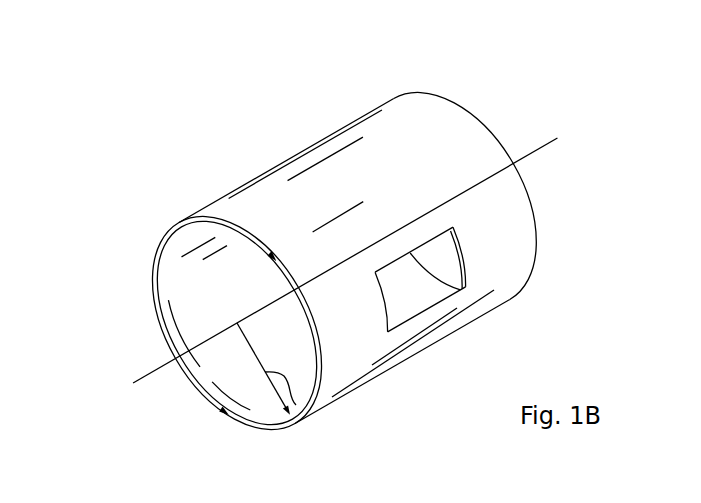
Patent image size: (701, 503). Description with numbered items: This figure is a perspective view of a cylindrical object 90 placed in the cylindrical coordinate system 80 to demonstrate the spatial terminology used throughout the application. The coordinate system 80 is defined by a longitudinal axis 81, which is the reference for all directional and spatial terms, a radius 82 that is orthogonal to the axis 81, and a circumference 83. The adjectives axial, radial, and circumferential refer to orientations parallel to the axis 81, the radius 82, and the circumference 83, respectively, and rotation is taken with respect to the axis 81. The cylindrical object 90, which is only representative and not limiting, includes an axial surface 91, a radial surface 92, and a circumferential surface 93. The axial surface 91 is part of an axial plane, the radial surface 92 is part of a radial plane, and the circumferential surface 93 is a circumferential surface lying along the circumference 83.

The cylindrical coordinate system 80 is at (485, 105).
The longitudinal axis 81 is at (143, 378).
The radius 82 is at (296, 405).
The circumference 83 is at (160, 243).
The cylindrical object 90 is at (375, 90).
The axial surface 91 is at (438, 296).
The radial surface 92 is at (250, 420).
The circumferential surface 93 is at (323, 176).